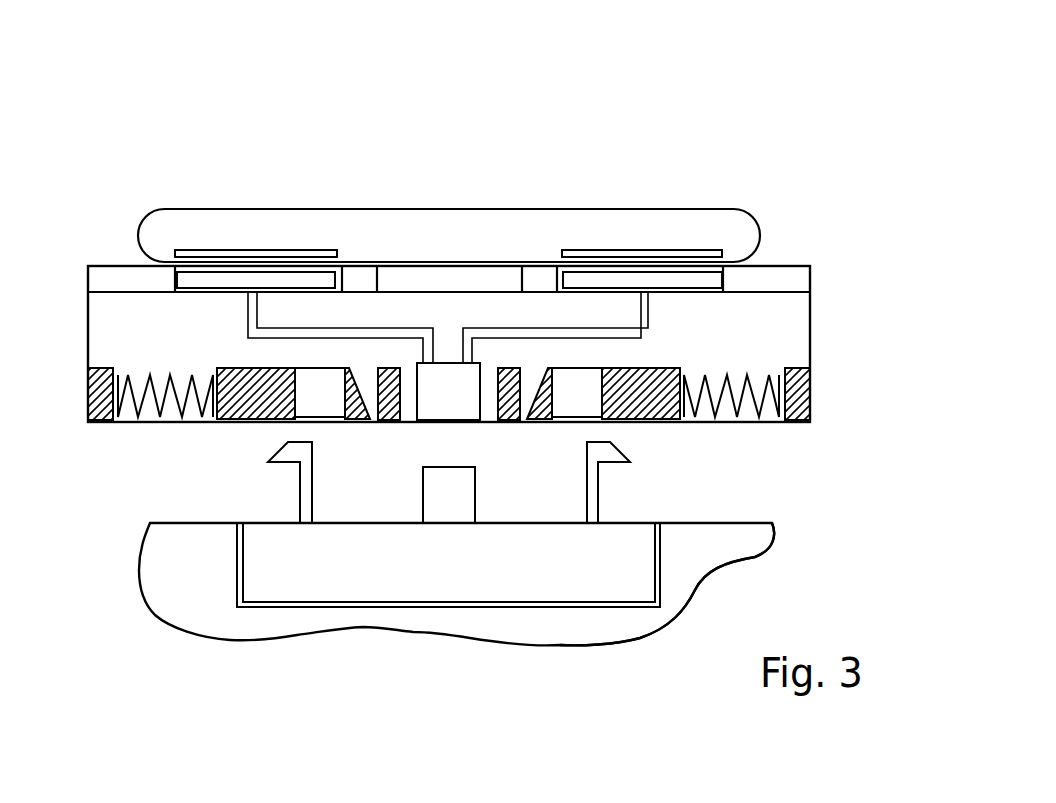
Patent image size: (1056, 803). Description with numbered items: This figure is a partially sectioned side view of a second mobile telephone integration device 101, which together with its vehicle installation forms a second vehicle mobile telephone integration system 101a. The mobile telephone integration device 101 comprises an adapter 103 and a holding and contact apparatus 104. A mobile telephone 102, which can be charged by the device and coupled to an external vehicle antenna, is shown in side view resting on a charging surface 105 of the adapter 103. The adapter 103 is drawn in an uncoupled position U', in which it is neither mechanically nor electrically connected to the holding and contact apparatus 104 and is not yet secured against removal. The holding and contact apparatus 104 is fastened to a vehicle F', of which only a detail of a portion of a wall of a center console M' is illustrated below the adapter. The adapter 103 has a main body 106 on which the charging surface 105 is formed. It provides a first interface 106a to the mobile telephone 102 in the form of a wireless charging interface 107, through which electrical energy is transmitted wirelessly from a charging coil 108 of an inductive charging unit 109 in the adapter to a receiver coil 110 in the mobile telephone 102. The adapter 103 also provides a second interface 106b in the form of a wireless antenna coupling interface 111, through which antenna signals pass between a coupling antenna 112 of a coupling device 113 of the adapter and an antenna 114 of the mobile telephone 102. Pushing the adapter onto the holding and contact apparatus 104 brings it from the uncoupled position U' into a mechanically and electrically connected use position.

The second mobile telephone integration device 101 is at (546, 214).
The second vehicle mobile telephone integration system 101a is at (853, 149).
The mobile telephone 102 is at (697, 228).
The adapter 103 is at (793, 310).
The holding and contact apparatus 104 is at (572, 572).
The charging surface 105 is at (787, 263).
The main body 106 is at (777, 347).
The first interface 106a is at (200, 175).
The second interface 106b is at (709, 147).
The wireless charging interface 107 is at (200, 175).
The charging coil 108 is at (200, 175).
The inductive charging unit 109 is at (202, 280).
The receiver coil 110 is at (227, 250).
The wireless antenna coupling interface 111 is at (709, 147).
The coupling antenna 112 is at (709, 147).
The coupling device 113 is at (573, 278).
The antenna 114 is at (613, 253).
The uncoupled position U' is at (546, 214).
The center console M' is at (514, 585).
The vehicle F' is at (725, 584).